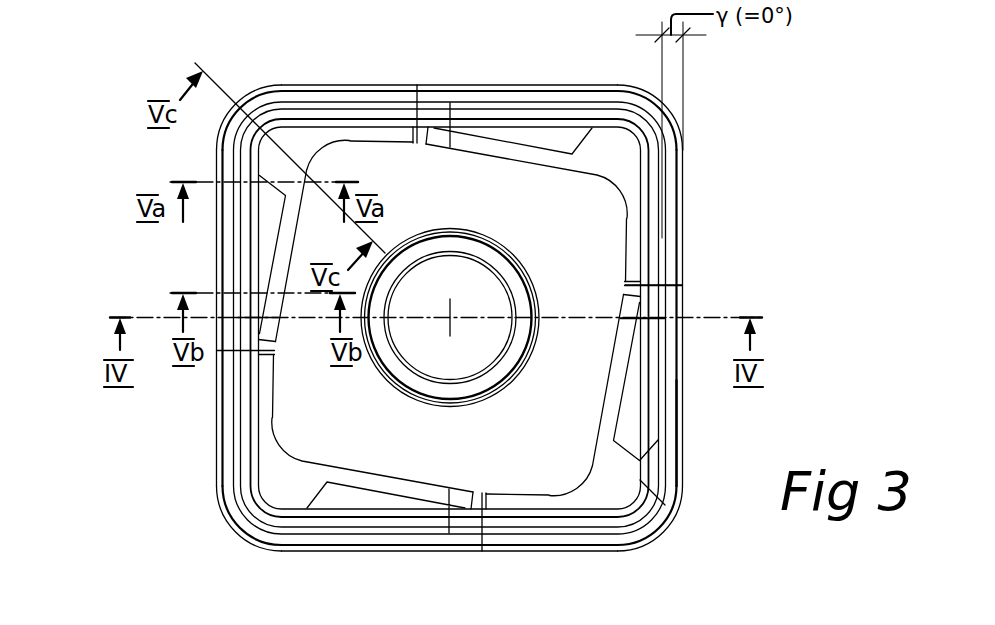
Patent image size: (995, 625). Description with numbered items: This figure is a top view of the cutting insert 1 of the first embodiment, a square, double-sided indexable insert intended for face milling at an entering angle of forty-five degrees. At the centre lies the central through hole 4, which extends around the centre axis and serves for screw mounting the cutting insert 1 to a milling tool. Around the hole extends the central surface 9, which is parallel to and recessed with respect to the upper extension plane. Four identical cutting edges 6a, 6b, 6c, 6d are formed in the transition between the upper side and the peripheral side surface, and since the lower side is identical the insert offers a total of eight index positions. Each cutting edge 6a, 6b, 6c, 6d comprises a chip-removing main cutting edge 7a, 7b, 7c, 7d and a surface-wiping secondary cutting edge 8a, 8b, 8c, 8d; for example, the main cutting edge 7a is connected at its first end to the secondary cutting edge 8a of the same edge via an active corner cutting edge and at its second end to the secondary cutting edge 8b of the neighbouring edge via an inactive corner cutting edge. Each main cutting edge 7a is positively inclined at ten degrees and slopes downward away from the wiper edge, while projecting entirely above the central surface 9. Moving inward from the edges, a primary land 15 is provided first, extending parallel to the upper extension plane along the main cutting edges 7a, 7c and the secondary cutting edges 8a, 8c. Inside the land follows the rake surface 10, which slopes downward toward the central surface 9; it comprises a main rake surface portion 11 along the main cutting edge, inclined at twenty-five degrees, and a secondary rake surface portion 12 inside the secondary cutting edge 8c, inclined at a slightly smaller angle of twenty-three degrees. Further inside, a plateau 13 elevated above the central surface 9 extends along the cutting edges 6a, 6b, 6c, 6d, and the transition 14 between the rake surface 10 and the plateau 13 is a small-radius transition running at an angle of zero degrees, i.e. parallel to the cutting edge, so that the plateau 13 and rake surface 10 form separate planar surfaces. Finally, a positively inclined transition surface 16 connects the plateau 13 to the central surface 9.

The cutting insert 1 is at (716, 124).
The central through hole 4 is at (473, 338).
The cutting edge 6a is at (661, 491).
The cutting edge 6b is at (581, 86).
The cutting edge 6c is at (217, 164).
The cutting edge 6d is at (263, 548).
The main cutting edge 7a is at (683, 433).
The main cutting edge 7b is at (541, 85).
The main cutting edge 7c is at (216, 231).
The main cutting edge 7d is at (343, 552).
The surface-wiping secondary cutting edge 8a is at (654, 534).
The surface-wiping secondary cutting edge 8b is at (651, 94).
The surface-wiping secondary cutting edge 8c is at (245, 103).
The surface-wiping secondary cutting edge 8d is at (236, 523).
The central surface 9 is at (487, 203).
The rake surface 10 is at (671, 180).
The main rake surface portion 11 is at (671, 381).
The secondary rake surface portion 12 is at (664, 504).
The plateau 13 is at (650, 404).
The transition 14 is at (660, 460).
The primary land 15 is at (677, 226).
The transition surface 16 is at (633, 421).